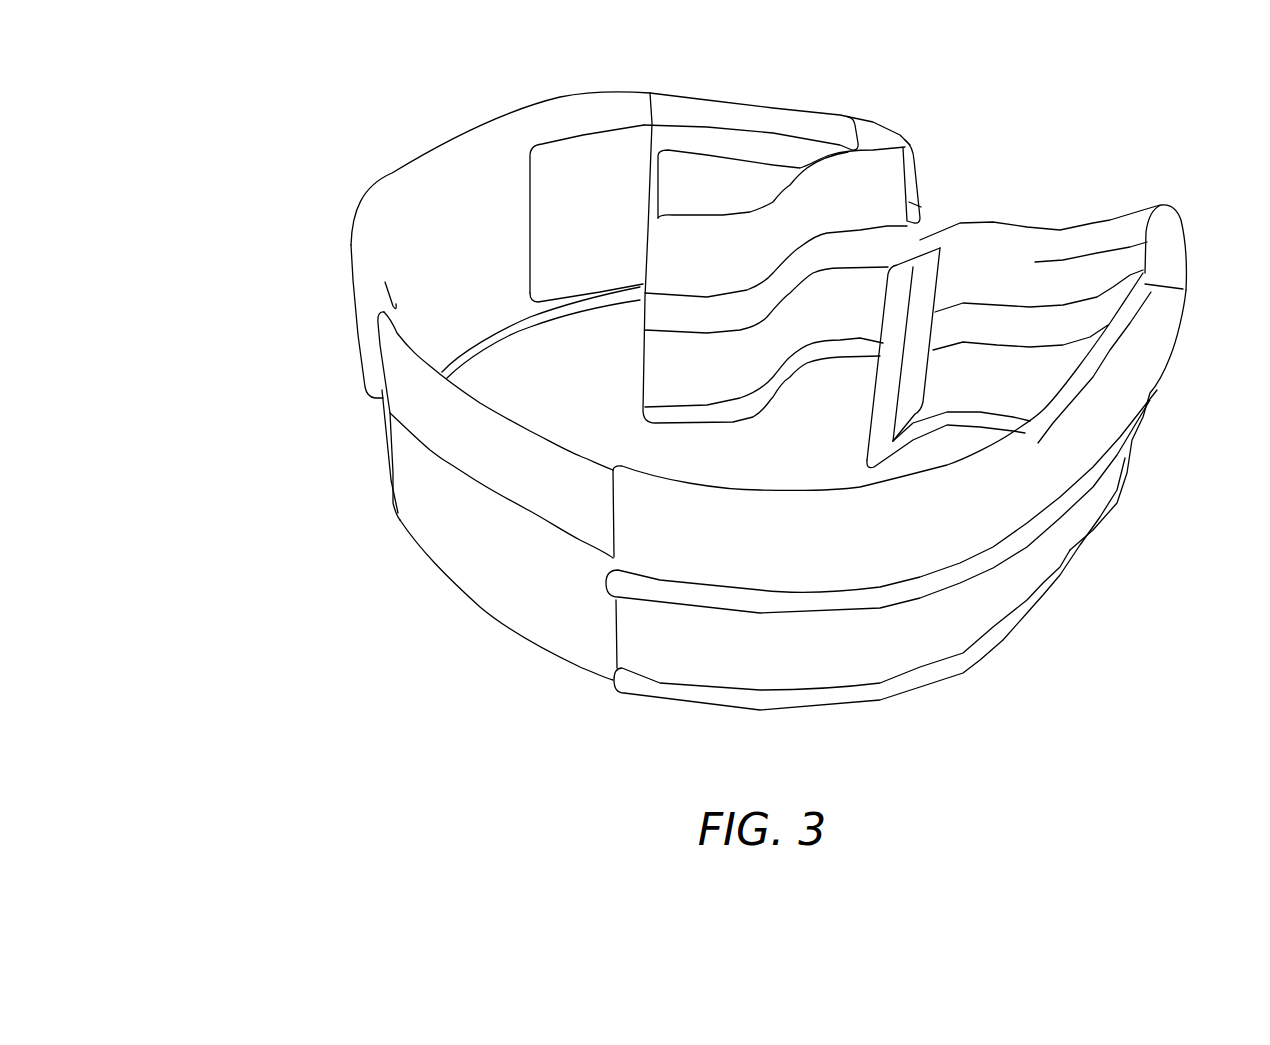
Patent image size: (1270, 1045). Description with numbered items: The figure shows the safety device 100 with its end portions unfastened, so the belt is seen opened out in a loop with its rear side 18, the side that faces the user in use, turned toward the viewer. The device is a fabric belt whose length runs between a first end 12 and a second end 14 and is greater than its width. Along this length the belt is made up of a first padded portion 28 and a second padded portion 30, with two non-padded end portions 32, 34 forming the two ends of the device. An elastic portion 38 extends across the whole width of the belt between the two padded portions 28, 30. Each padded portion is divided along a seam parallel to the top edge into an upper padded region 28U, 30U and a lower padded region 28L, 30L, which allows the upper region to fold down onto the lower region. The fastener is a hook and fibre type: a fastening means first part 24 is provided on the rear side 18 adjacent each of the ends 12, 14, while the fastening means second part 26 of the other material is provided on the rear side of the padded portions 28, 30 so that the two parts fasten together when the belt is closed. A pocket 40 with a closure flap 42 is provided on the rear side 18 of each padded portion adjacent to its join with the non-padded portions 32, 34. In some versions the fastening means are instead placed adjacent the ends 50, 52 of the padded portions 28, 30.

The safety device 100 is at (231, 110).
The first end 12 is at (870, 420).
The second end 14 is at (641, 367).
The rear side 18 is at (443, 183).
The fastening means first part 24 is at (937, 278).
The fastening means second part 26 is at (582, 147).
The first padded portion 28 is at (917, 560).
The lower padded region of first padded portion 28L is at (1184, 289).
The upper padded region of first padded portion 28U is at (1163, 343).
The second padded portion 30 is at (392, 180).
The lower padded region of second padded portion 30L is at (390, 300).
The upper padded region of second padded portion 30U is at (367, 330).
The non-padded end portion 32 is at (1060, 240).
The non-padded end portion 34 is at (822, 182).
The elastic portion 38 is at (569, 653).
The pocket 40 is at (703, 177).
The closure flap 42 is at (763, 122).
The end of padded portion 50 is at (1181, 211).
The end of padded portion 52 is at (920, 148).